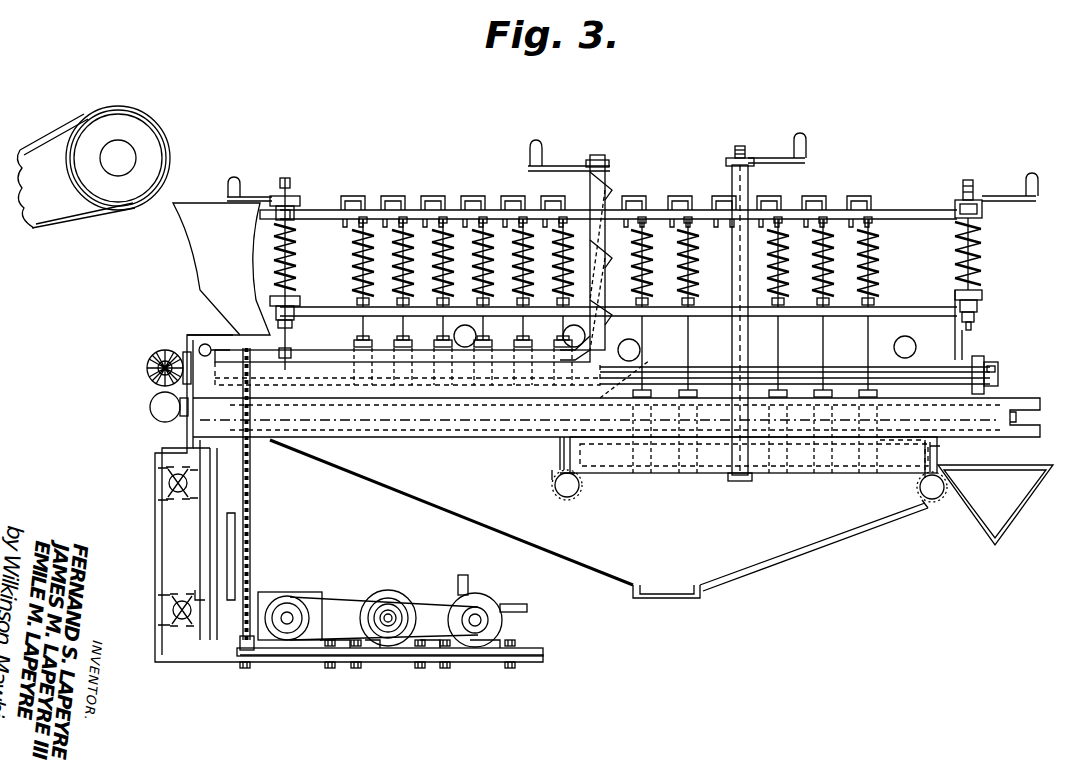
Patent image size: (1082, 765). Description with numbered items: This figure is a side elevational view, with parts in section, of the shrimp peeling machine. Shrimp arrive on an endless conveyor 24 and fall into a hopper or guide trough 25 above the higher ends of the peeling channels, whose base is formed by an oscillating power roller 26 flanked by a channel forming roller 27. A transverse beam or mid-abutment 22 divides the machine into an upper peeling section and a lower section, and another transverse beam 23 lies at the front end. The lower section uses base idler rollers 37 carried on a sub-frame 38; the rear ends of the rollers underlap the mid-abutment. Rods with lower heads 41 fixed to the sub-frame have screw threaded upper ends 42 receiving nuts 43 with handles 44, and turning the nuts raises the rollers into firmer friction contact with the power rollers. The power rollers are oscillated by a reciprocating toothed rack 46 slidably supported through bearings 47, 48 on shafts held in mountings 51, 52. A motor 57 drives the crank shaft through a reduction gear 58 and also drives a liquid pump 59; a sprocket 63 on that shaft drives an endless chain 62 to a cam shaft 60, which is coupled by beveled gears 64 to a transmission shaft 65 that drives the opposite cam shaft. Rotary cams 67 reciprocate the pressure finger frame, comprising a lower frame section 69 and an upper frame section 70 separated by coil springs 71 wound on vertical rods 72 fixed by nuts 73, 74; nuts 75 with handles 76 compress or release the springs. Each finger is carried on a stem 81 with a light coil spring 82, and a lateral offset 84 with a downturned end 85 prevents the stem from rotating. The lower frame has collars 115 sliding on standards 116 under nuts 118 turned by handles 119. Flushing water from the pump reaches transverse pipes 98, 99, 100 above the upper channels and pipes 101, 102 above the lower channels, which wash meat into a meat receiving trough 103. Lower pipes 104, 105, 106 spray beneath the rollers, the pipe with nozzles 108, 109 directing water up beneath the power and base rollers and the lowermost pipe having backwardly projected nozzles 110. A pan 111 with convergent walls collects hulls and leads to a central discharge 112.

The transverse beam or mid-abutment 22 is at (520, 437).
The transverse beam 23 is at (1032, 398).
The endless conveyor 24 is at (56, 122).
The hopper or guide trough 25 is at (193, 215).
The power roller 26 is at (378, 437).
The channel forming roller 27 is at (296, 354).
The base idler roller 37 is at (822, 473).
The sub-frame 38 is at (632, 474).
The lower head 41 is at (736, 482).
The screw threaded upper end 42 is at (742, 146).
The nut 43 is at (726, 158).
The handle 44 is at (806, 146).
The reciprocating toothed rack 46 is at (212, 508).
The bearing 47 is at (192, 508).
The bearing 48 is at (195, 581).
The mounting 51 is at (168, 478).
The mounting 52 is at (168, 612).
The motor 57 is at (390, 590).
The reduction gear 58 is at (290, 592).
The liquid pump 59 is at (484, 600).
The cam shaft 60 is at (996, 368).
The endless chain 62 is at (252, 496).
The sprocket 63 is at (240, 650).
The beveled gears 64 is at (147, 370).
The transmission shaft 65 is at (160, 360).
The rotary cam 67 is at (978, 352).
The lower frame section 69 is at (916, 308).
The upper frame section 70 is at (900, 210).
The coil spring 71 is at (980, 250).
The vertical rod 72 is at (968, 180).
The nut 73 is at (980, 323).
The nut 74 is at (980, 295).
The nut 75 is at (958, 200).
The handle 76 is at (1006, 190).
The stem or rod 81 is at (353, 260).
The light coil spring 82 is at (362, 300).
The lateral offset 84 is at (353, 196).
The downturned end 85 is at (316, 210).
The transverse pipe 98 is at (200, 342).
The transverse pipe 99 is at (454, 334).
The transverse pipe 100 is at (566, 334).
The transverse pipe 101 is at (639, 351).
The transverse pipe 102 is at (912, 328).
The meat receiving trough 103 is at (1008, 490).
The transverse pipe 104 is at (150, 412).
The transverse pipe 105 is at (567, 500).
The transverse pipe 106 is at (926, 500).
The nozzles 108 is at (562, 450).
The nozzles 109 is at (582, 478).
The nozzles 110 is at (918, 482).
The pan 111 is at (762, 560).
The central lowermost discharge 112 is at (688, 598).
The collar 115 is at (606, 190).
The vertical standard or rod 116 is at (596, 204).
The nut 118 is at (592, 164).
The handle 119 is at (564, 144).